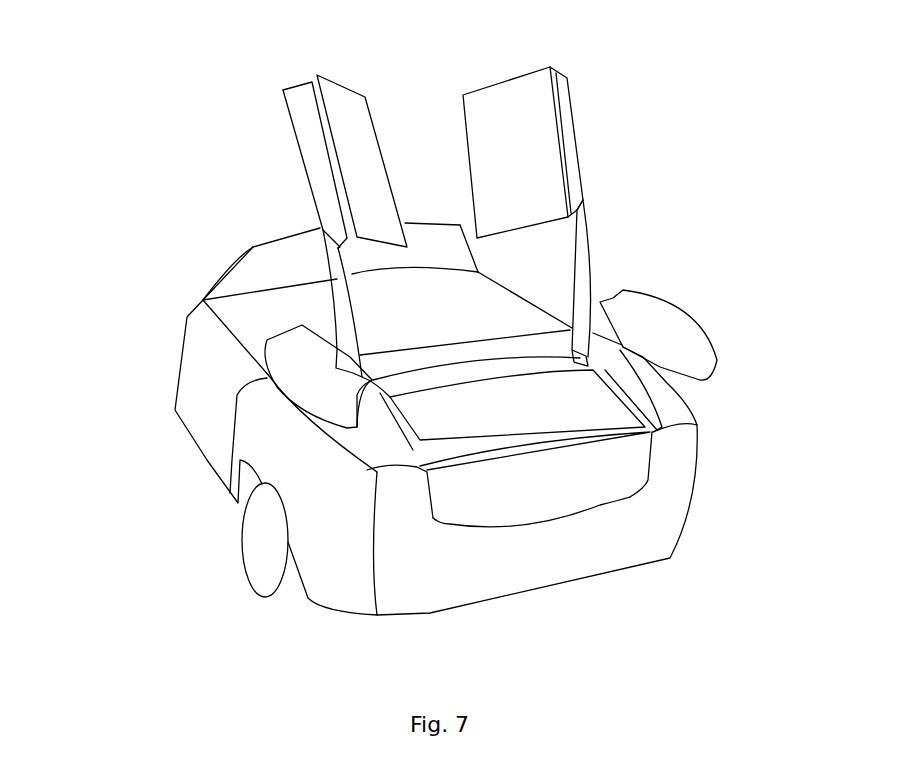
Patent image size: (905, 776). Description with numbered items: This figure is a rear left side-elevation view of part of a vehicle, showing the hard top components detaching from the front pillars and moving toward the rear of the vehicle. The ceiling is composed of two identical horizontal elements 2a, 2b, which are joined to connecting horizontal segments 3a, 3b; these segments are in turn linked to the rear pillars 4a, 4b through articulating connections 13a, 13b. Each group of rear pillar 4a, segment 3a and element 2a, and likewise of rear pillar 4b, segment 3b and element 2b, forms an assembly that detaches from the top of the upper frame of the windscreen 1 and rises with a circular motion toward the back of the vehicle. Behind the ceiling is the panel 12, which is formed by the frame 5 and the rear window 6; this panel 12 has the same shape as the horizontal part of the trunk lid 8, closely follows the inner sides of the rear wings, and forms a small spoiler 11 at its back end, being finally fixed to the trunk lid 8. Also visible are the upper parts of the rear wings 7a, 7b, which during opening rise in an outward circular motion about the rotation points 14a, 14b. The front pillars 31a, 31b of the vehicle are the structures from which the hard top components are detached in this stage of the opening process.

The upper frame of the windscreen 1 is at (270, 238).
The horizontal element 2a is at (345, 112).
The horizontal element 2b is at (505, 123).
The connecting horizontal segment 3a is at (313, 145).
The connecting horizontal segment 3b is at (572, 143).
The rear pillar 4a is at (240, 252).
The rear pillar 4b is at (588, 279).
The frame 5 is at (443, 449).
The rear window 6 is at (583, 412).
The rear wing 7a is at (313, 358).
The rear wing 7b is at (642, 313).
The trunk lid 8 is at (571, 487).
The spoiler 11 is at (550, 442).
The panel 12 is at (618, 379).
The articulating connection 13a is at (320, 228).
The articulating connection 13b is at (587, 207).
The rotation point 14a is at (277, 393).
The rotation point 14b is at (632, 347).
The front pillar 31a is at (337, 287).
The right roof corner 31b is at (478, 248).